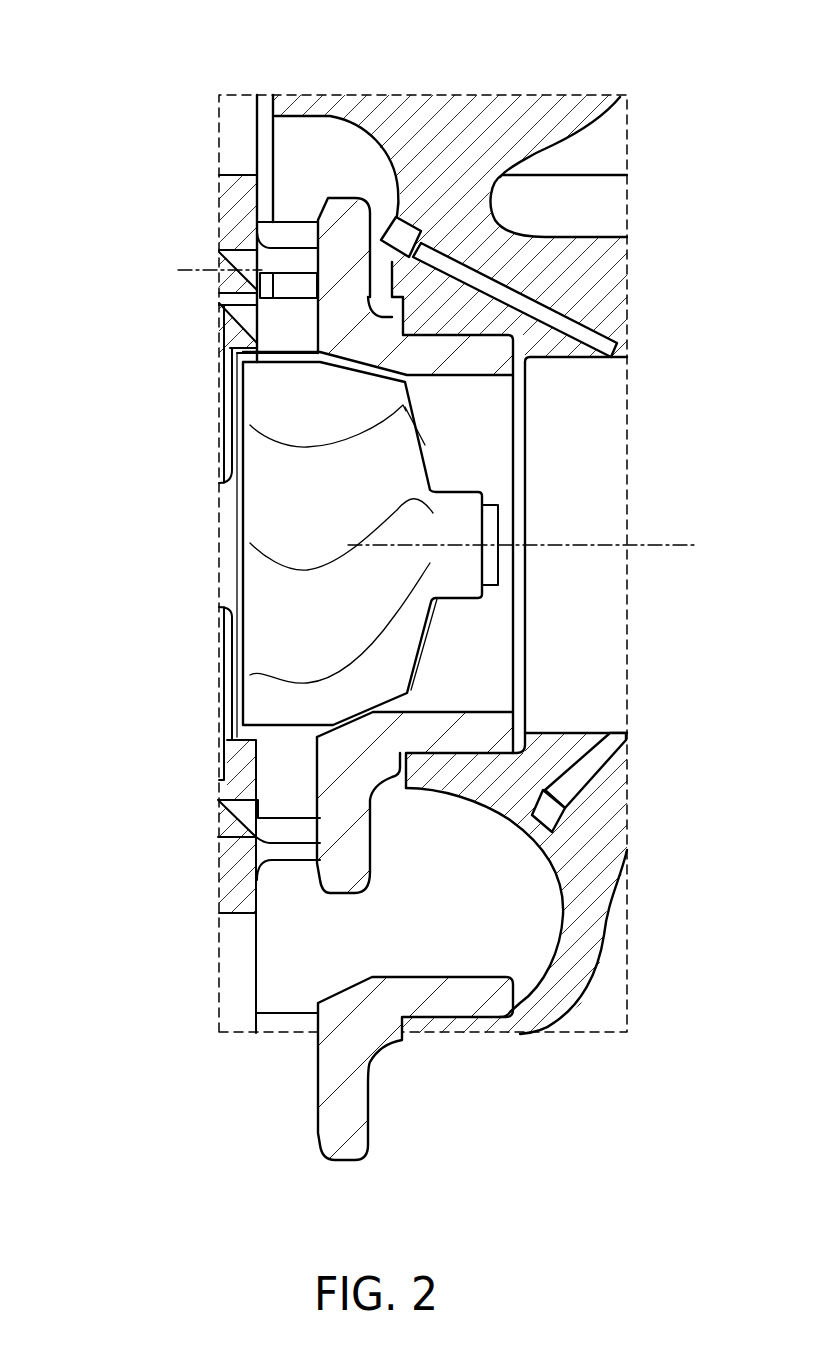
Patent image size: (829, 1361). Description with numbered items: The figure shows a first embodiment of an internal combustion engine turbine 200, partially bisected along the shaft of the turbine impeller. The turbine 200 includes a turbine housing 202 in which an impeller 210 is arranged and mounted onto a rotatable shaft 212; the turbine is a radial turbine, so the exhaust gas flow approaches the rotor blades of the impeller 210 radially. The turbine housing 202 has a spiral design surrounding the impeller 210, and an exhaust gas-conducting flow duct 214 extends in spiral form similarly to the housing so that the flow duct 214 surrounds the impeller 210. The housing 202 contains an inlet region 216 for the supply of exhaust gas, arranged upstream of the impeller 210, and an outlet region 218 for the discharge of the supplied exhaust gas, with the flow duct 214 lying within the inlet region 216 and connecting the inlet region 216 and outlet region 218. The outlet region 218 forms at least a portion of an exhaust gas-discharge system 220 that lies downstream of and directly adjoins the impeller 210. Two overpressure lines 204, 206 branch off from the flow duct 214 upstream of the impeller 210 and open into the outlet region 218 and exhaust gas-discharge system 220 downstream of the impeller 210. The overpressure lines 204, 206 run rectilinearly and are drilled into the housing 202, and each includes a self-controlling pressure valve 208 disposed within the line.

The internal combustion engine turbine 200 is at (110, 211).
The turbine housing 202 is at (563, 120).
The overpressure line 204 is at (590, 328).
The overpressure line 206 is at (607, 733).
The self-controlling pressure valve 208 is at (382, 216).
The impeller 210 is at (297, 514).
The rotatable shaft 212 is at (470, 532).
The exhaust gas-conducting flow duct 214 is at (282, 154).
The inlet region 216 is at (282, 186).
The outlet region 218 is at (447, 451).
The exhaust gas-discharge system 220 is at (552, 641).